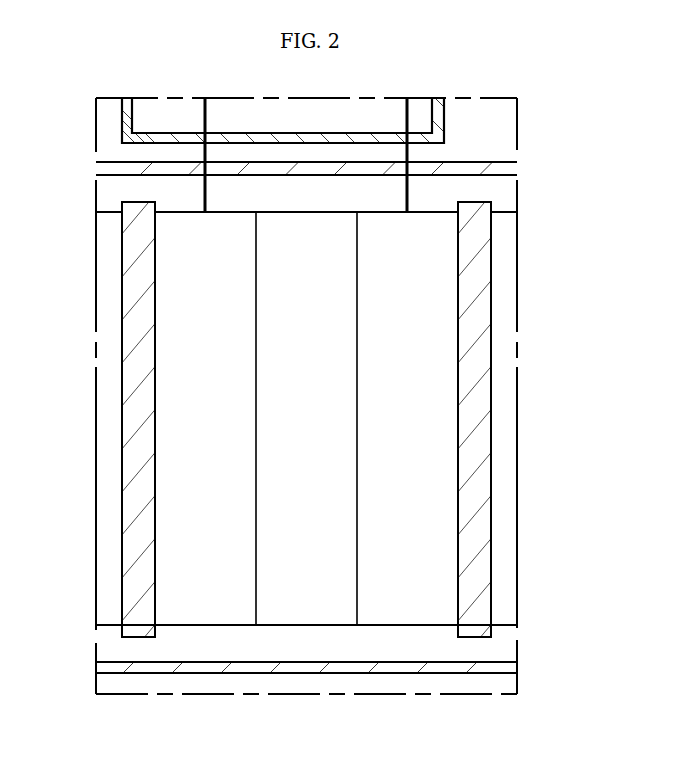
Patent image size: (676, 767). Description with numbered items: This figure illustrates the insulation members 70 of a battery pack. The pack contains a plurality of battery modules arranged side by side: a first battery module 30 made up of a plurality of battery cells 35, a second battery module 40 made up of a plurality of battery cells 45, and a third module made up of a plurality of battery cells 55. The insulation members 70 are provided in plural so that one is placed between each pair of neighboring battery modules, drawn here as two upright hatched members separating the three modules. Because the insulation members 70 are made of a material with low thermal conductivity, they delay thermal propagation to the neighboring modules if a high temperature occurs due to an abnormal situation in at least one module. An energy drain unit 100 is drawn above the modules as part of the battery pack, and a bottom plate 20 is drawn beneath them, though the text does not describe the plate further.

The energy drain unit 100 is at (113, 112).
The first battery module 30 is at (92, 317).
The battery cells 35 is at (107, 388).
The battery cells 55 is at (528, 315).
The second battery module 40 is at (335, 630).
The battery cells 45 is at (298, 610).
The insulation member 70 is at (140, 617).
The bottom plate 20 is at (203, 675).